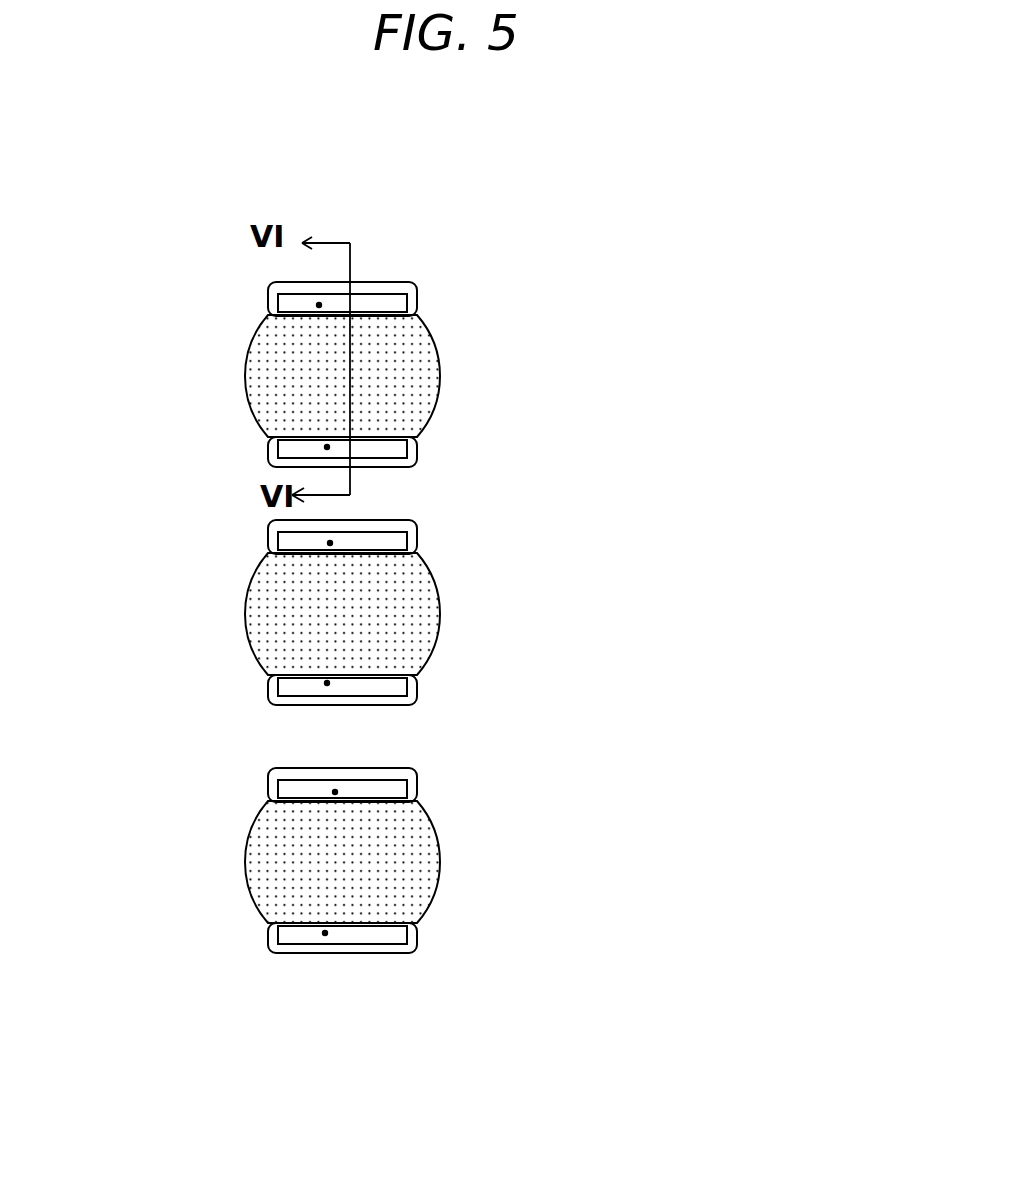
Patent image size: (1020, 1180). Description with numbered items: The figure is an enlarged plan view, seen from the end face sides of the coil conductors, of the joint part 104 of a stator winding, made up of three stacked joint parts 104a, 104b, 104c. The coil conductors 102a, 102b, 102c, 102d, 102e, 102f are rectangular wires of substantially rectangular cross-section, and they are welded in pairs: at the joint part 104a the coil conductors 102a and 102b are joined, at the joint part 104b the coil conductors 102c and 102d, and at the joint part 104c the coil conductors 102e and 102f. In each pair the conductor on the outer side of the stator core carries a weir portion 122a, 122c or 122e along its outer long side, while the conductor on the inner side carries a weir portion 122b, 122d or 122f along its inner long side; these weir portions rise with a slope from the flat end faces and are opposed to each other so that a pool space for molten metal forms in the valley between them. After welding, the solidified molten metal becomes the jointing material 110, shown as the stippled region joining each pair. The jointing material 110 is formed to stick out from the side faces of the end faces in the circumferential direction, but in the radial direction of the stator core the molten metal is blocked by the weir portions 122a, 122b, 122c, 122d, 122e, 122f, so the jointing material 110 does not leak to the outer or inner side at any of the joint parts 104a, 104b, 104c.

The joint part 104 is at (798, 258).
The joint part 104a is at (446, 383).
The joint part 104b is at (456, 615).
The joint part 104c is at (456, 871).
The jointing material 110 is at (247, 370).
The coil conductor 102a is at (415, 305).
The coil conductor 102b is at (415, 452).
The coil conductor 102c is at (417, 552).
The coil conductor 102d is at (417, 688).
The coil conductor 102e is at (417, 795).
The coil conductor 102f is at (417, 935).
The weir portion 122a is at (319, 305).
The weir portion 122b is at (327, 447).
The weir portion 122c is at (330, 543).
The weir portion 122d is at (327, 683).
The weir portion 122e is at (335, 792).
The weir portion 122f is at (325, 933).